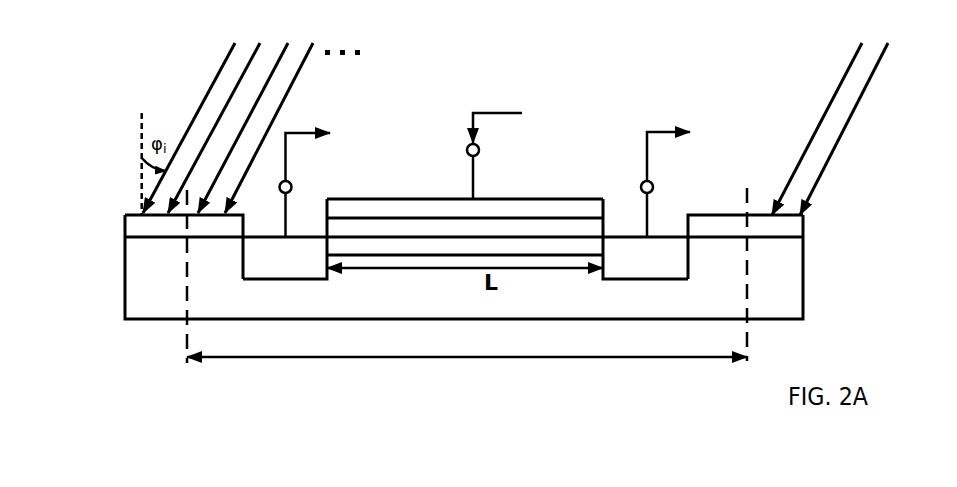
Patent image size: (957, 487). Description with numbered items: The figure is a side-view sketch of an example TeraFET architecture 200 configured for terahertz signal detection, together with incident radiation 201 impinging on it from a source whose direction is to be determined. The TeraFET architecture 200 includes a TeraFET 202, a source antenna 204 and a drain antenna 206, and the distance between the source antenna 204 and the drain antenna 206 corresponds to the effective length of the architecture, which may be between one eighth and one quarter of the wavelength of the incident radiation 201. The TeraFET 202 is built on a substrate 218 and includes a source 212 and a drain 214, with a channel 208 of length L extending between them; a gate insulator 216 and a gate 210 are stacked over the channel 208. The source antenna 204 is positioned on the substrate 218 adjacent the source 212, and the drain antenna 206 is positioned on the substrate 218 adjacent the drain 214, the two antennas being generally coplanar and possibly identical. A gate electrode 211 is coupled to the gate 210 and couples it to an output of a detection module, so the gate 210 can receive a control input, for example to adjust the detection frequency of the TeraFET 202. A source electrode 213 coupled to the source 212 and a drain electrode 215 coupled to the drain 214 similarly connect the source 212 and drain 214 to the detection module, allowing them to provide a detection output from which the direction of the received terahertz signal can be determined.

The TeraFET architecture 200 is at (62, 218).
The incident radiation 201 is at (217, 54).
The TeraFET 202 is at (342, 331).
The source antenna 204 is at (140, 222).
The drain antenna 206 is at (792, 222).
The channel 208 is at (582, 247).
The gate 210 is at (405, 212).
The gate electrode 211 is at (470, 181).
The source 212 is at (295, 272).
The source electrode 213 is at (282, 220).
The drain 214 is at (663, 272).
The drain electrode 215 is at (647, 215).
The gate insulator 216 is at (555, 230).
The substrate 218 is at (142, 277).